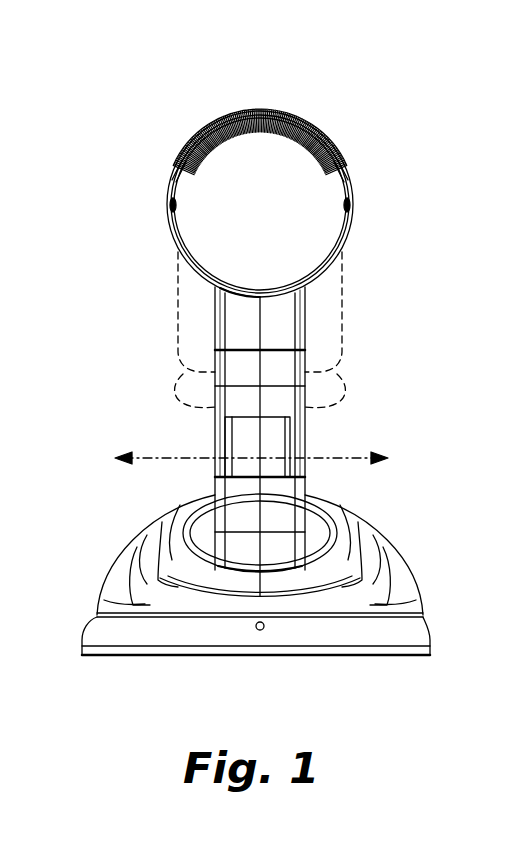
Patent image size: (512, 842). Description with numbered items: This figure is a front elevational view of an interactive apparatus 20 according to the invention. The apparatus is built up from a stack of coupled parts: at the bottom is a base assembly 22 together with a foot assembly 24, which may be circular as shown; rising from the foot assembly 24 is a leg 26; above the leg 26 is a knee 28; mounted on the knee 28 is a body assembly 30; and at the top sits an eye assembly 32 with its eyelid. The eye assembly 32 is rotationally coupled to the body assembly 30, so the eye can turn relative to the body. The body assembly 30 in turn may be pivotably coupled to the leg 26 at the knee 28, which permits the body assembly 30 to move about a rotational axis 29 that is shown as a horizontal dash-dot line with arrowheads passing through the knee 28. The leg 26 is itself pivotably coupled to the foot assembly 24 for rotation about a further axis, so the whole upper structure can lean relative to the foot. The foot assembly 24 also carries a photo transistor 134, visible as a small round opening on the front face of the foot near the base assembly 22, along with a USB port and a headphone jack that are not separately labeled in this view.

The interactive apparatus 20 is at (373, 62).
The base assembly 22 is at (345, 553).
The foot assembly 24 is at (412, 633).
The leg 26 is at (236, 512).
The knee 28 is at (270, 442).
The rotational axis 29 is at (356, 460).
The body assembly 30 is at (278, 372).
The eye assembly 32 is at (202, 197).
The photo transistor 134 is at (262, 630).